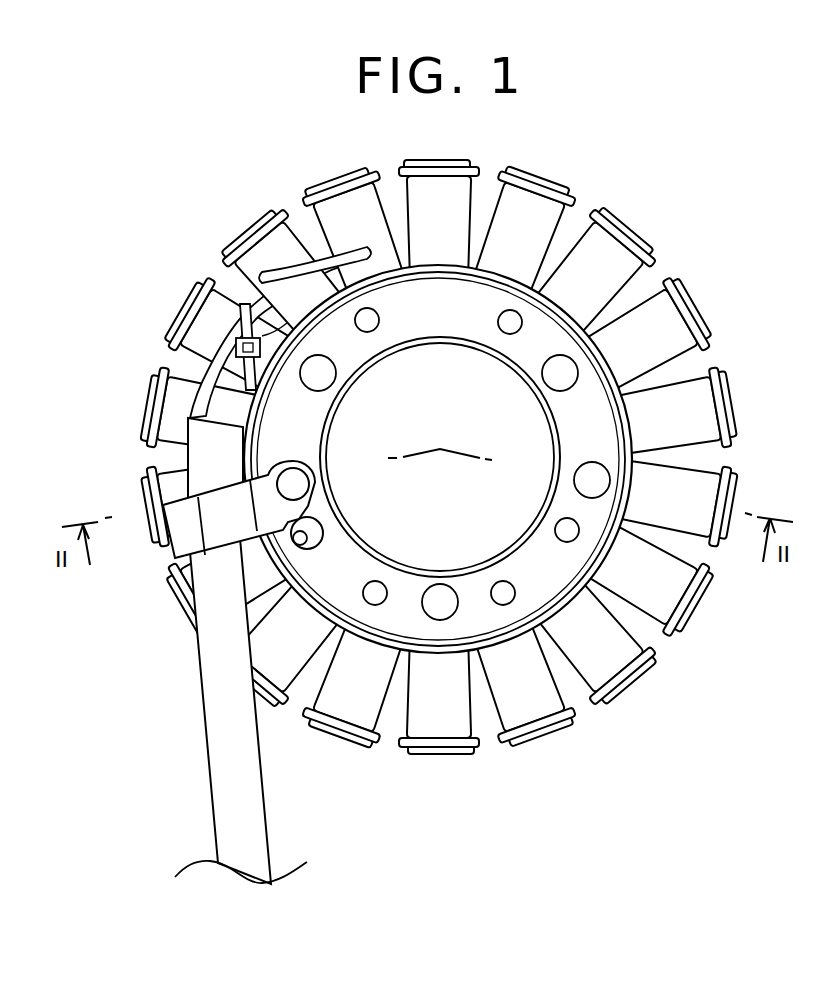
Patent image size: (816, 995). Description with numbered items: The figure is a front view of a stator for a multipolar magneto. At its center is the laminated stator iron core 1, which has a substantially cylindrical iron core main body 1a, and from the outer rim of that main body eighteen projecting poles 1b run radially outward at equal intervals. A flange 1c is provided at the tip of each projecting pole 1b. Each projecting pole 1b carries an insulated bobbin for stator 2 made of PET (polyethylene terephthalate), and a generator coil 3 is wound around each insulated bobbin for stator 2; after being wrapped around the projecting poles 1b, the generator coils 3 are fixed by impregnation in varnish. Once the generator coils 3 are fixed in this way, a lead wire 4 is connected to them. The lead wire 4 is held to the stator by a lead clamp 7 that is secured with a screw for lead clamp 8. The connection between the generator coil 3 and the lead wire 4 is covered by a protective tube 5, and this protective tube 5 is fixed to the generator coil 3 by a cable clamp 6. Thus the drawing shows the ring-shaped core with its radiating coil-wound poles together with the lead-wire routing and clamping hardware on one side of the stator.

The stator iron core 1 is at (537, 407).
The iron core main body 1a is at (511, 345).
The projecting pole 1b is at (592, 208).
The flange 1c is at (655, 253).
The insulated bobbin for stator 2 is at (672, 280).
The generator coil 3 is at (716, 372).
The lead wire 4 is at (265, 793).
The protective tube 5 is at (208, 373).
The cable clamp 6 is at (243, 302).
The lead clamp 7 is at (170, 556).
The screw for lead clamp 8 is at (323, 493).